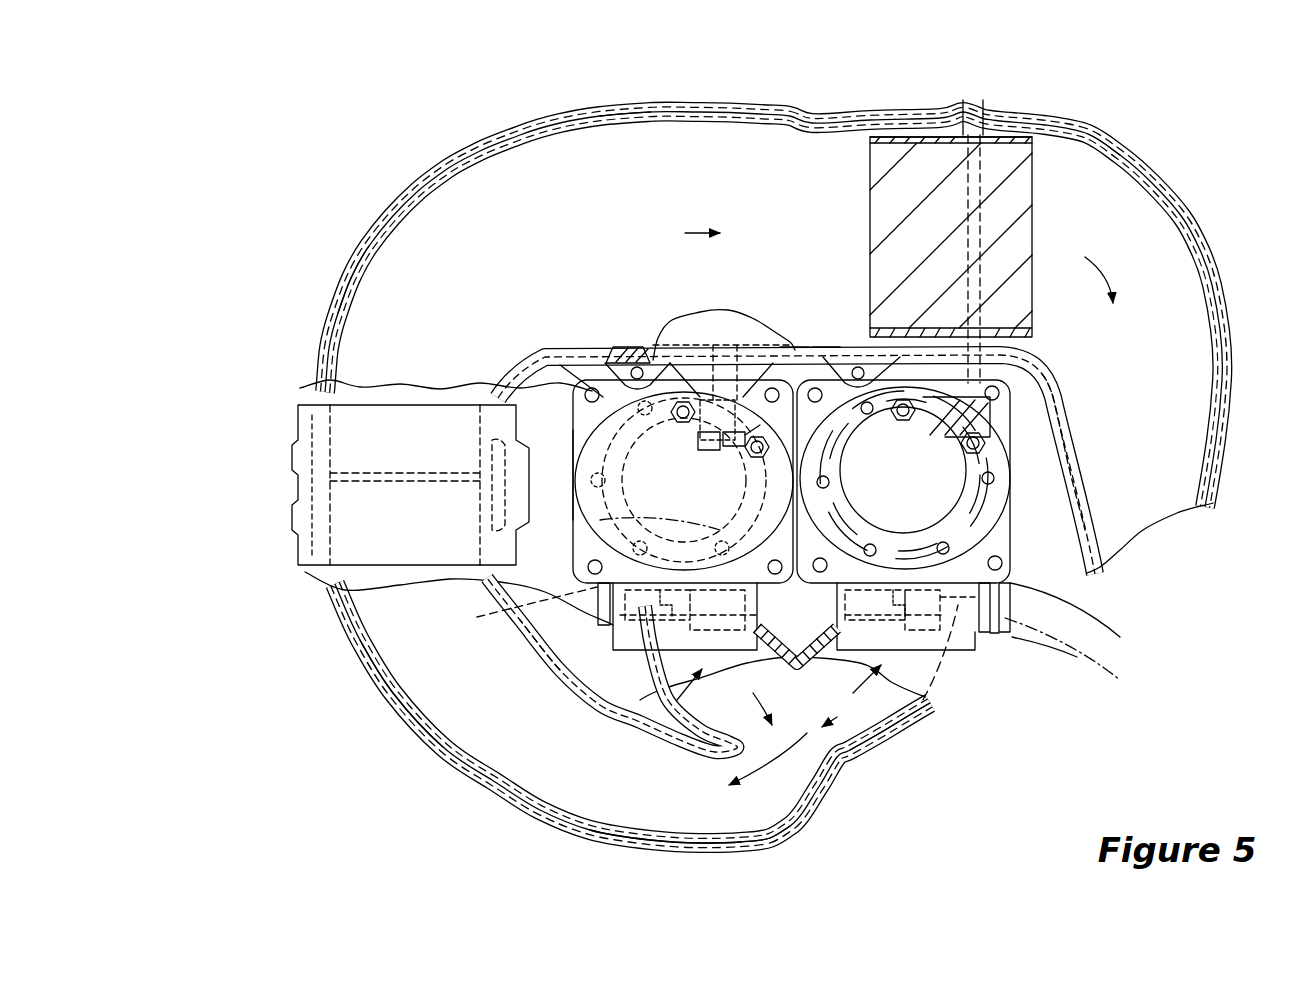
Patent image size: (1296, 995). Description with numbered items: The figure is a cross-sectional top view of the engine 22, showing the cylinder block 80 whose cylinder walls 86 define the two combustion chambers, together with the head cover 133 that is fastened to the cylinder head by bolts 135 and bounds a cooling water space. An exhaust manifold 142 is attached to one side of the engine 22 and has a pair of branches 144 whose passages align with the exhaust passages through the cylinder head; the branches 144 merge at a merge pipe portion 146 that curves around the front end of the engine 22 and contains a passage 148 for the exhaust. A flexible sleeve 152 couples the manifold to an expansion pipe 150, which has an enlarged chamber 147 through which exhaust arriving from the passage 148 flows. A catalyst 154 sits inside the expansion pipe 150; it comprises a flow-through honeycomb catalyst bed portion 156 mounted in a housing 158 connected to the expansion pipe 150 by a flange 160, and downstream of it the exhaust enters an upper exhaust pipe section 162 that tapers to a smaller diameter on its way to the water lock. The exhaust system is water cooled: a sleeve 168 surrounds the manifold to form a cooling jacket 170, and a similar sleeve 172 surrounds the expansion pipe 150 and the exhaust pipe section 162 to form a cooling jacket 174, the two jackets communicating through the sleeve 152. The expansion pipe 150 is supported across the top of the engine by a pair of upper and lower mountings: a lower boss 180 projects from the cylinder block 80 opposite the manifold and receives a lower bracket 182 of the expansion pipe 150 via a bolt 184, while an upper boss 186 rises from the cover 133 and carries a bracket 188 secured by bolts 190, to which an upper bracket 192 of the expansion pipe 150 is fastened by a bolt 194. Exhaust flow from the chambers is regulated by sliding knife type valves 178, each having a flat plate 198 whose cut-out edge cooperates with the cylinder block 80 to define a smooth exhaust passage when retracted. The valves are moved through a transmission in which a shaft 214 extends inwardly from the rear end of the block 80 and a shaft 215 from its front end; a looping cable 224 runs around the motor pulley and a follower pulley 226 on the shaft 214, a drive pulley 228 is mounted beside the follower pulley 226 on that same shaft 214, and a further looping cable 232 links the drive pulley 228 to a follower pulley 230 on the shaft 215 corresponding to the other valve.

The engine 22 is at (431, 140).
The cylinder block 80 is at (1017, 457).
The cylinder walls 86 is at (850, 488).
The head cover 133 is at (578, 455).
The bolts 135 is at (598, 390).
The exhaust manifold 142 is at (812, 834).
The branches 144 is at (908, 712).
The merge pipe portion 146 is at (736, 866).
The enlarged passage or chamber 147 is at (697, 140).
The passage 148 is at (355, 699).
The expansion pipe 150 is at (610, 103).
The flexible sleeve 152 is at (292, 500).
The catalyst 154 is at (841, 238).
The honeycomb catalyst bed portion 156 is at (868, 178).
The housing 158 is at (866, 145).
The flange 160 is at (978, 105).
The upper exhaust pipe section 162 is at (1108, 136).
The sleeve 168 is at (577, 843).
The cooling jacket 170 is at (454, 764).
The sleeve 172 is at (372, 215).
The cooling jacket 174 is at (357, 253).
The sliding knife type valve 178 is at (733, 735).
The lower boss 180 is at (552, 352).
The lower flange or bracket 182 is at (822, 346).
The bolt 184 is at (635, 365).
The upper boss 186 is at (796, 347).
The bracket 188 is at (704, 395).
The bolts 190 is at (703, 397).
The upper bracket 192 is at (740, 370).
The bolt 194 is at (735, 430).
The plate 198 is at (640, 518).
The shaft 214 is at (983, 633).
The shaft 215 is at (517, 617).
The looping cable 224 is at (1040, 572).
The follower pulley 226 is at (1015, 637).
The drive pulley 228 is at (995, 637).
The follower pulley 230 is at (572, 628).
The looping cable 232 is at (960, 503).